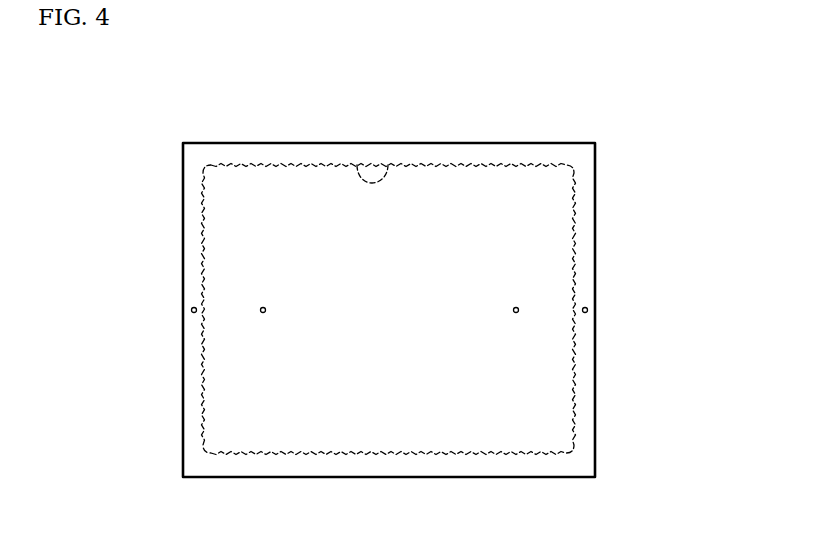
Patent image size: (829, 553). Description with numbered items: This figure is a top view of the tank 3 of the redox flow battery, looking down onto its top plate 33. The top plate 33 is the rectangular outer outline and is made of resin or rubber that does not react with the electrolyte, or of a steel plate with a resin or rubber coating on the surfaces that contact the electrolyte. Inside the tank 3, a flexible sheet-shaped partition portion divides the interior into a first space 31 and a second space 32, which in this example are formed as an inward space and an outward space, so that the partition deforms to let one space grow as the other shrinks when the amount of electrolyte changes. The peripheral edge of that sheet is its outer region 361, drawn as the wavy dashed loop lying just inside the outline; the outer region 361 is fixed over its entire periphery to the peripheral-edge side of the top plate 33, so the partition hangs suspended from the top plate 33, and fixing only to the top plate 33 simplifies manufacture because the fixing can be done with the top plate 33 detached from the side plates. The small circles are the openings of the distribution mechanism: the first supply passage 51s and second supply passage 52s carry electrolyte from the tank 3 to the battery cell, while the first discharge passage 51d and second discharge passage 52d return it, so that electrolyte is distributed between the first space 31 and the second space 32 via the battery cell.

The tank 3 is at (598, 192).
The first space 31 is at (360, 440).
The second space 32 is at (442, 465).
The top plate 33 is at (221, 160).
The outer region 361 is at (358, 175).
The first discharge passage 51d is at (261, 309).
The second discharge passage 52d is at (192, 310).
The first supply passage 51s is at (518, 309).
The second supply passage 52s is at (587, 310).